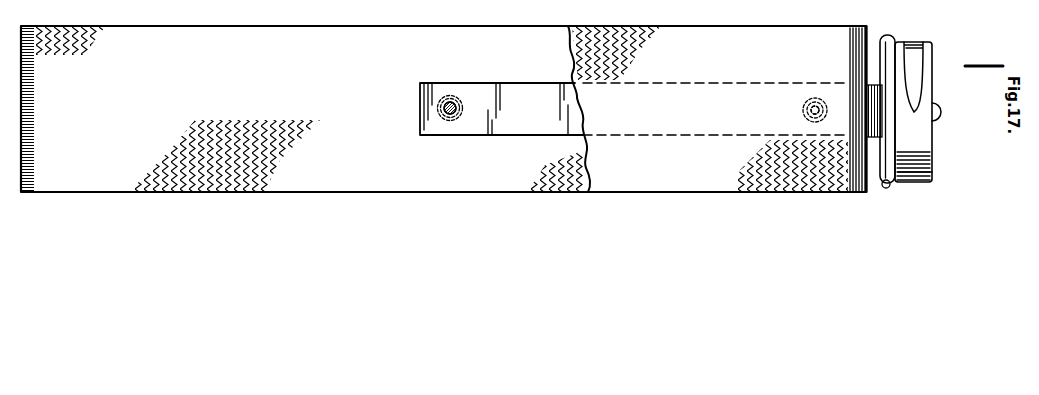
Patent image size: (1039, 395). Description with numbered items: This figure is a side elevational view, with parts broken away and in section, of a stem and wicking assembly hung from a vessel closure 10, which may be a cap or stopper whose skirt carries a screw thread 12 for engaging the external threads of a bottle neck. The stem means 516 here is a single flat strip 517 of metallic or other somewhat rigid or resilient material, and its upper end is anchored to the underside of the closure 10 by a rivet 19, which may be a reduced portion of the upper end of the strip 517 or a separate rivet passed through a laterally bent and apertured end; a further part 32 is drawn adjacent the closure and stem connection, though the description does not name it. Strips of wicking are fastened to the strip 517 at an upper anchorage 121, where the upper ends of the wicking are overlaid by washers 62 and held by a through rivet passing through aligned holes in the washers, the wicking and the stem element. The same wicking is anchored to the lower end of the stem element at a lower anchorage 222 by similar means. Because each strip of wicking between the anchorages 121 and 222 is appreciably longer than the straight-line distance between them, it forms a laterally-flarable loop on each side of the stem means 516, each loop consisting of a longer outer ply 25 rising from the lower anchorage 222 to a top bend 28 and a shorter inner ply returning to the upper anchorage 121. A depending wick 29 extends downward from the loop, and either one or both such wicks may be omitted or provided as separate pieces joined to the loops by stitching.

The depending wick 29 is at (226, 193).
The outer ply 25 is at (576, 195).
The strip 517 is at (457, 136).
The stem means 516 is at (491, 146).
The washer 62 is at (451, 94).
The lower anchorage 222 is at (438, 108).
The upper anchorage 121 is at (804, 110).
The top bend 28 is at (850, 195).
The spring clip 32 is at (880, 187).
The vessel closure 10 is at (926, 182).
The screw thread 12 is at (900, 180).
The rivet 19 is at (938, 118).